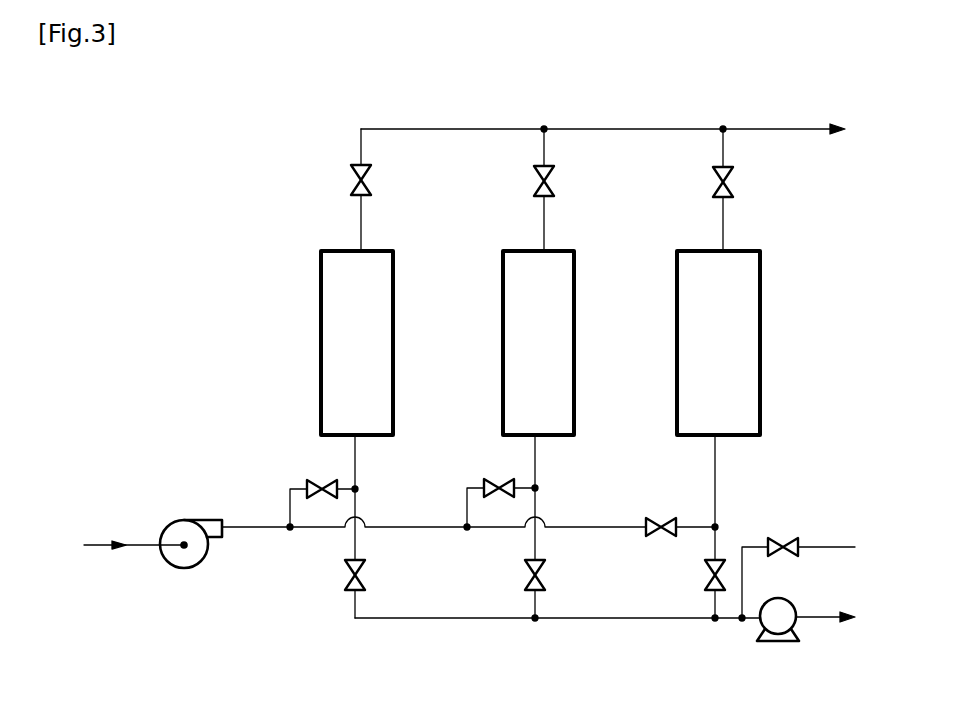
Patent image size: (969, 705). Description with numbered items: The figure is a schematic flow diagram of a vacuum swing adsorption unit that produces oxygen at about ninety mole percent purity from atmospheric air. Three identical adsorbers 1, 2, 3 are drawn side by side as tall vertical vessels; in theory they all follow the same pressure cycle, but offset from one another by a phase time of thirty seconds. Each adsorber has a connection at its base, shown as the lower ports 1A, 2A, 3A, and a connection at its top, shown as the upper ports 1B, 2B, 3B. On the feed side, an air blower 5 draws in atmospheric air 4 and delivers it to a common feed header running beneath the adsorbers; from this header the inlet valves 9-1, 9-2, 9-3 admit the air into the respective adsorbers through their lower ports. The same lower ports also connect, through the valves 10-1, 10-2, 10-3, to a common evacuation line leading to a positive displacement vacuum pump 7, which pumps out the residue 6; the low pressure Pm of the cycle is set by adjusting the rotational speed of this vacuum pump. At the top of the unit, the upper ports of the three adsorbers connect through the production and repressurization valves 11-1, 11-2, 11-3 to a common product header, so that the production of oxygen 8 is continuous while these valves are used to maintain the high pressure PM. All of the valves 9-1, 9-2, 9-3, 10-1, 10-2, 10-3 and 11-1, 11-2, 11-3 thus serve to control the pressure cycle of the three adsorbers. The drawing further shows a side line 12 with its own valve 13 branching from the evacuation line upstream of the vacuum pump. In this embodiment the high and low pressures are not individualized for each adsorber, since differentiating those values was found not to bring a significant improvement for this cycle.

The adsorber 1 is at (340, 315).
The adsorber 2 is at (512, 315).
The adsorber 3 is at (683, 313).
The lower port of first tower 1A is at (357, 445).
The lower port of second tower 2A is at (537, 445).
The lower port of third tower 3A is at (717, 447).
The upper port of first tower 1B is at (359, 248).
The upper port of second tower 2B is at (542, 248).
The upper port of third tower 3B is at (721, 248).
The atmospheric air 4 is at (140, 547).
The air blower 5 is at (188, 569).
The residue 6 is at (724, 621).
The positive displacement vacuum pump 7 is at (772, 643).
The oxygen production 8 is at (782, 129).
The valve 9-1 is at (321, 480).
The valve 9-2 is at (496, 479).
The valve 9-3 is at (668, 488).
The valve 10-1 is at (347, 572).
The valve 10-2 is at (527, 572).
The valve 10-3 is at (708, 574).
The production and repressurization valve 11-1 is at (374, 181).
The production and repressurization valve 11-2 is at (556, 181).
The production and repressurization valve 11-3 is at (735, 182).
The purge gas line 12 is at (826, 547).
The purge valve 13 is at (782, 538).